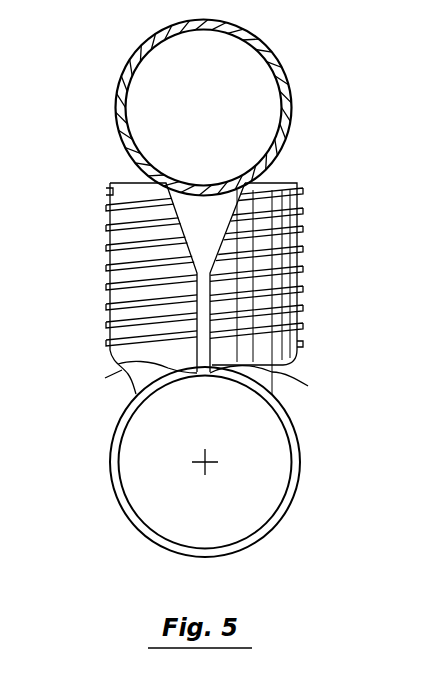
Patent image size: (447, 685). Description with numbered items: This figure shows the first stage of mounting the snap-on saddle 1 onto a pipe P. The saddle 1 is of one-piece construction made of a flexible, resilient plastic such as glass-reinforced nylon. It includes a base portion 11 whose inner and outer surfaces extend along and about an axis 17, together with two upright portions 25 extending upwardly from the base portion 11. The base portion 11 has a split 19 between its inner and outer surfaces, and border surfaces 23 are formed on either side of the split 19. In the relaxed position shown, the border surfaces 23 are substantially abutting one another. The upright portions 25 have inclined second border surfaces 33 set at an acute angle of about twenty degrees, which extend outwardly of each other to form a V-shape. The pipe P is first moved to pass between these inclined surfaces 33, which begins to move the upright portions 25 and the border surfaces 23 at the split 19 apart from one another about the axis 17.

The pipe P is at (272, 50).
The saddle 1 is at (230, 337).
The base portion 11 is at (150, 538).
The axis 17 is at (207, 467).
The split 19 is at (200, 386).
The border surfaces 23 is at (123, 370).
The upright portions 25 is at (105, 251).
The second border surfaces 33 is at (219, 244).